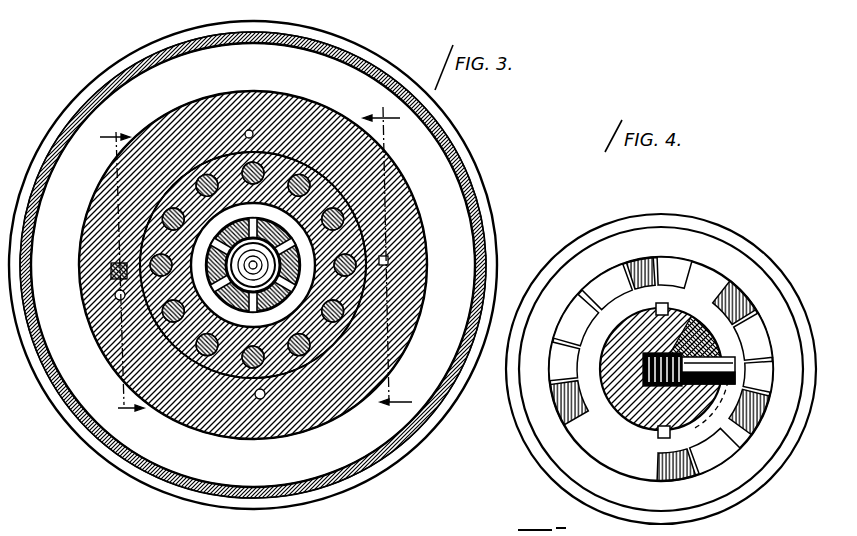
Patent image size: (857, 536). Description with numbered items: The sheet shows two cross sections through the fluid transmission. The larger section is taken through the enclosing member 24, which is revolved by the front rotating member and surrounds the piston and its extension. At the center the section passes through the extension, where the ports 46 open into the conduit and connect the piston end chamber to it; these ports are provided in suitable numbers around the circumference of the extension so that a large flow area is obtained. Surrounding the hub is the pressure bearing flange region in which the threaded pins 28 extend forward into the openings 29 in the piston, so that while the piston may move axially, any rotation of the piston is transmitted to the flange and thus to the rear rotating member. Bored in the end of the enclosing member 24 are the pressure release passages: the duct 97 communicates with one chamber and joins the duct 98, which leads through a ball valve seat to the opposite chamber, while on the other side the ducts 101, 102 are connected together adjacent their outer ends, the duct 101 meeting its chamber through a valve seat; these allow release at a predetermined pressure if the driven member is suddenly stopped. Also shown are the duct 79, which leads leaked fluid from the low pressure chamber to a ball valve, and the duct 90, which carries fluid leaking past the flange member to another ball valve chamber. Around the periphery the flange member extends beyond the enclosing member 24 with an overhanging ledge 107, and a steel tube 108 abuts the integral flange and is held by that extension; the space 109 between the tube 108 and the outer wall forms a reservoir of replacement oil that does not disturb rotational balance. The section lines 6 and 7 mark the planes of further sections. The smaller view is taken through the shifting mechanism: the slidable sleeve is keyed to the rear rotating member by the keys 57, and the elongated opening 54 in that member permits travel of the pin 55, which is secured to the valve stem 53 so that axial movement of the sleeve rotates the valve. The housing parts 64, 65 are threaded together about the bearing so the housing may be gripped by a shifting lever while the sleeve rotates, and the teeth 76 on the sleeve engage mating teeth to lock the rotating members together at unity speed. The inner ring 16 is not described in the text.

In FIG. 3, the overhanging ledge 107 is at (300, 33).
In FIG. 3, the steel tube 108 is at (447, 137).
In FIG. 3, the space 109 is at (368, 440).
In FIG. 3, the enclosing member 24 is at (313, 98).
In FIG. 3, the duct 102 is at (393, 230).
In FIG. 3, the openings 29 is at (190, 372).
In FIG. 3, the threaded pins 28 is at (206, 183).
In FIG. 3, the duct 79 is at (251, 131).
In FIG. 3, the duct 90 is at (259, 399).
In FIG. 3, the ports 46 is at (214, 296).
In FIG. 3, the duct 101 is at (388, 261).
In FIG. 3, the duct 98 is at (111, 271).
In FIG. 3, the duct 97 is at (117, 298).
In FIG. 3, the section line 7- 7 is at (387, 257).
In FIG. 3, the section line 6- 6 is at (122, 271).
In FIG. 4, the housing part 64 is at (580, 240).
In FIG. 4, the housing part 65 is at (617, 242).
In FIG. 4, the inner ring 16 is at (748, 433).
In FIG. 4, the teeth 76 is at (566, 344).
In FIG. 4, the elongated opening 54 is at (688, 408).
In FIG. 4, the valve stem 53 is at (672, 320).
In FIG. 4, the keys 57 is at (656, 309).
In FIG. 4, the pin 55 is at (742, 347).